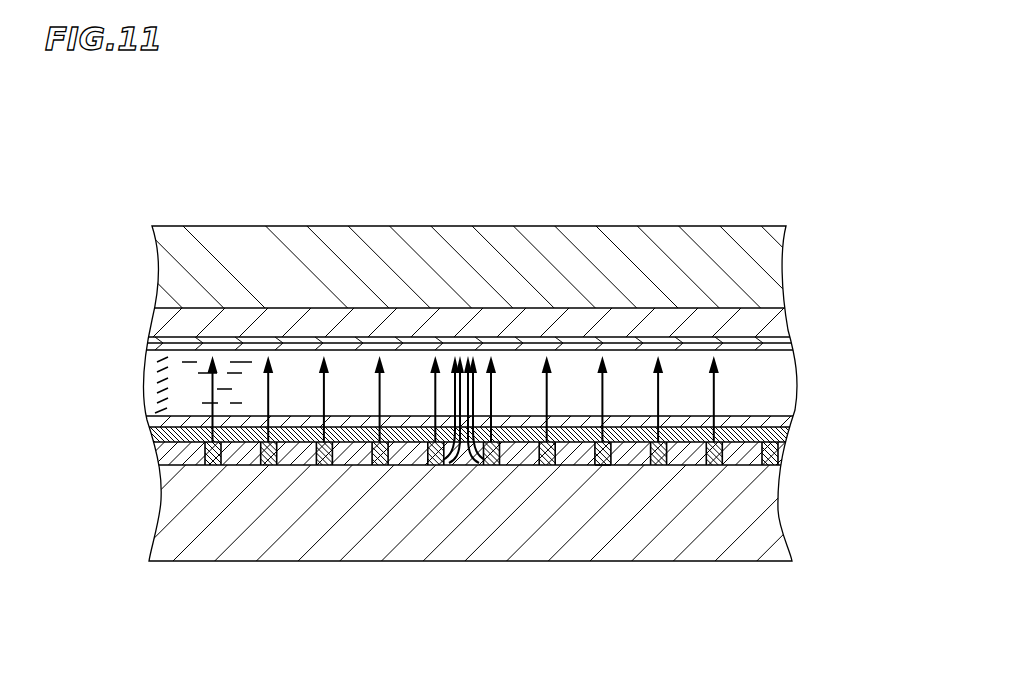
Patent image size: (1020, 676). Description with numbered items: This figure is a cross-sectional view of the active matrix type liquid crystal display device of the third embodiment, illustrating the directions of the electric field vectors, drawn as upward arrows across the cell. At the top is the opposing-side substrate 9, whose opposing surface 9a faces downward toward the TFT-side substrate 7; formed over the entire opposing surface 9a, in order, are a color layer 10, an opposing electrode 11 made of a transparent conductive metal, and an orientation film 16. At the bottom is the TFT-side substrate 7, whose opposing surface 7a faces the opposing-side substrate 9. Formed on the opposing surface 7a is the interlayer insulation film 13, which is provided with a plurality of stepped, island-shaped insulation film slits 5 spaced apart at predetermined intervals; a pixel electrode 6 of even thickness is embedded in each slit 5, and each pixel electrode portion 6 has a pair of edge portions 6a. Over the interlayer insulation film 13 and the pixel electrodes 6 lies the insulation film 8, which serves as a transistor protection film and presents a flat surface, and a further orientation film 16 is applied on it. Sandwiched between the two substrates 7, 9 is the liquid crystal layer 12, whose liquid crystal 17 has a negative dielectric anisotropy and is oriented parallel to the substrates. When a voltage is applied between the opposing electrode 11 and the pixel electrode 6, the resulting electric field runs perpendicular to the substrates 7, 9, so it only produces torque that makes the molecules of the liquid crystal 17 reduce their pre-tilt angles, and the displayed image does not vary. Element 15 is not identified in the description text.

The insulation film slit 5 is at (268, 466).
The pixel electrode 6 is at (548, 442).
The edge portion 6a is at (535, 443).
The TFT-side substrate 7 is at (190, 543).
The opposing surface 7a is at (756, 462).
The insulation film 8 is at (628, 442).
The opposing-side substrate 9 is at (234, 252).
The opposing surface 9a is at (757, 310).
The color layer 10 is at (381, 325).
The opposing electrode 11 is at (520, 343).
The liquid crystal layer 12 is at (698, 368).
The interlayer insulation film 13 is at (468, 440).
The insulating segments 15 is at (350, 466).
The orientation film 16 is at (622, 350).
The liquid crystal 17 is at (160, 380).